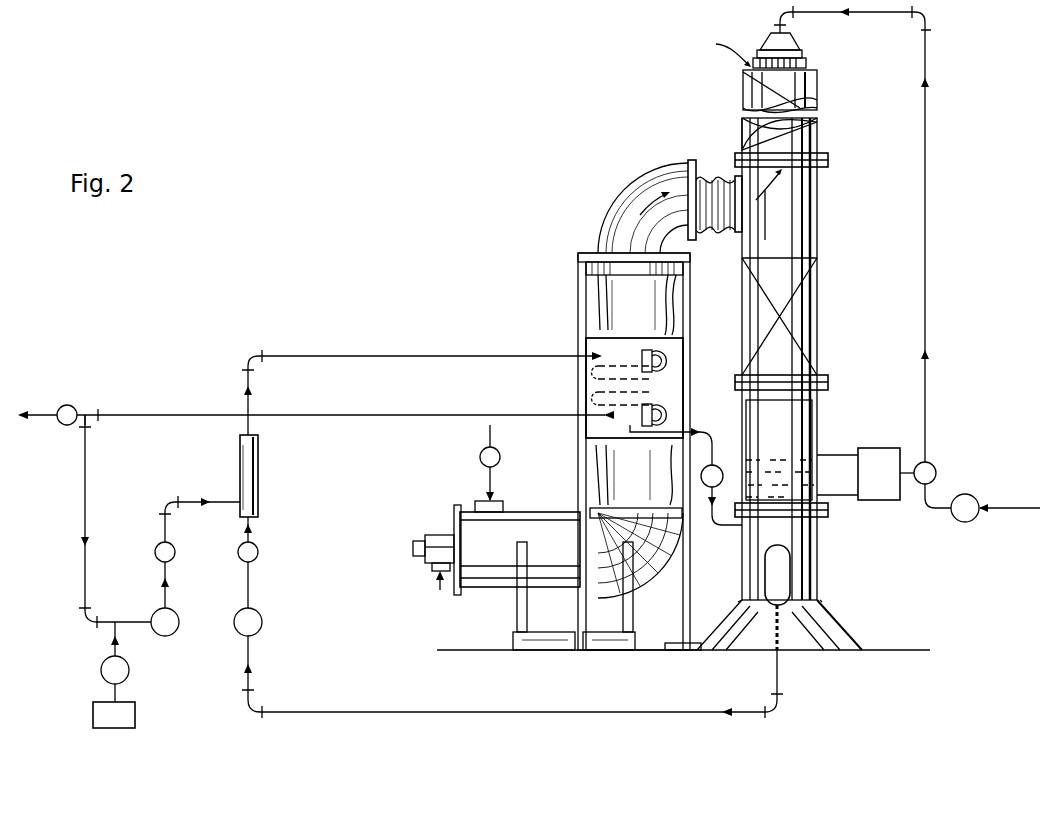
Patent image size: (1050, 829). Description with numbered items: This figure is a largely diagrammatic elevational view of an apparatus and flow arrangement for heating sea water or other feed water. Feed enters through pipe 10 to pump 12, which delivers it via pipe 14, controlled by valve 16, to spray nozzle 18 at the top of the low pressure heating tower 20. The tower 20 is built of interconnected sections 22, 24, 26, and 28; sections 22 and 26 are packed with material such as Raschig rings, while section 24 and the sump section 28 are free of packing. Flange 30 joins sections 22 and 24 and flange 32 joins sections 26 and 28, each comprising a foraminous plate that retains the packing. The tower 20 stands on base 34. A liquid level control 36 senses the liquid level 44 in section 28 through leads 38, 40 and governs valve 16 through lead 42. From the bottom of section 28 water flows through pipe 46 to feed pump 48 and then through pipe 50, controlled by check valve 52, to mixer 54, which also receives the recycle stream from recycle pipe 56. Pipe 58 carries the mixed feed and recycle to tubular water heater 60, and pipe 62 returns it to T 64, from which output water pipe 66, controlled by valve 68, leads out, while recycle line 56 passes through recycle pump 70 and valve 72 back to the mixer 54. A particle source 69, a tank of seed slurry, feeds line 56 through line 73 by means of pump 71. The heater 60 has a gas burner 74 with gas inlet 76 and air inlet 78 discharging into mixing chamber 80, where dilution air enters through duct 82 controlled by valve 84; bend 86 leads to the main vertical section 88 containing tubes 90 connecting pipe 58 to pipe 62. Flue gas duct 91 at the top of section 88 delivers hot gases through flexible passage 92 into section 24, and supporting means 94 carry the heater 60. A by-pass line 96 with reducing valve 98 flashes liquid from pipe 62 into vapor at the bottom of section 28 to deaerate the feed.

The pipe 10 is at (1009, 520).
The pump 12 is at (968, 494).
The pipe 14 is at (928, 293).
The valve 16 is at (931, 466).
The spray nozzle 18 is at (802, 122).
The low pressure heating tower 20 is at (818, 225).
The packed section 22 is at (818, 88).
The section 24 is at (752, 246).
The packed section 26 is at (752, 312).
The sump section 28 is at (774, 420).
The flange 30 is at (826, 160).
The flange 32 is at (829, 383).
The base 34 is at (817, 566).
The liquid level control 36 is at (880, 474).
The lead 38 is at (837, 470).
The lead 40 is at (826, 498).
The lead 42 is at (914, 494).
The liquid level 44 is at (798, 462).
The pipe 46 is at (512, 686).
The feed pump 48 is at (237, 614).
The pipe 50 is at (252, 586).
The valve 52 is at (256, 549).
The mixer 54 is at (259, 488).
The recycle pipe 56 is at (87, 510).
The pipe 58 is at (395, 357).
The tubular water heater 60 is at (578, 342).
The pipe 62 is at (403, 414).
The T 64 is at (86, 410).
The output water pipe 66 is at (50, 418).
The valve 68 is at (66, 426).
The particle source 69 is at (136, 712).
The recycle pump 70 is at (153, 613).
The pump 71 is at (101, 672).
The valve 72 is at (173, 549).
The line 73 is at (112, 638).
The gas burner 74 is at (444, 548).
The gas inlet 76 is at (433, 570).
The air inlet 78 is at (413, 551).
The mixing chamber 80 is at (519, 548).
The duct 82 is at (497, 472).
The valve 84 is at (497, 452).
The bend 86 is at (636, 576).
The main vertical section 88 is at (636, 390).
The tubes 90 is at (596, 378).
The flue gas duct 91 is at (607, 200).
The passage 92 is at (716, 176).
The supporting means 94 is at (665, 620).
The by-pass line 96 is at (712, 430).
The reducing valve 98 is at (718, 470).